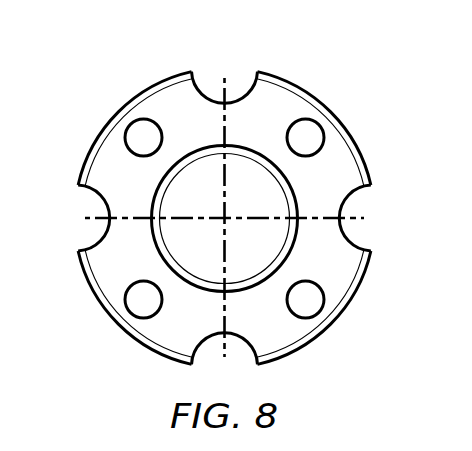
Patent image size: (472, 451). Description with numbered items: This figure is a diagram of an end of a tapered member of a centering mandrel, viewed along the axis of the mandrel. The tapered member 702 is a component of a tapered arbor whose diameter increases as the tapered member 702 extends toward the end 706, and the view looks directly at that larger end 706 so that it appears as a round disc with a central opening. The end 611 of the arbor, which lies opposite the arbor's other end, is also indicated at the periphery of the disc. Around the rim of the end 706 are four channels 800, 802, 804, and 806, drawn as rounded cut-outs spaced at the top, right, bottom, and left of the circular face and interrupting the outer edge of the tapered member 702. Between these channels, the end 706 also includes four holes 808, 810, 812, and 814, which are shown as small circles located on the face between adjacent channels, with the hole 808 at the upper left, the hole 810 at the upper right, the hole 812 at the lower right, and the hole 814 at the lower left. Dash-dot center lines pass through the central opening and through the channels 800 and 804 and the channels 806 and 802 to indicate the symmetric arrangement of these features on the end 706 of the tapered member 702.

The channel 800 is at (212, 82).
The tapered member 702 is at (154, 81).
The end 611 is at (282, 80).
The end 706 is at (375, 265).
The channel 802 is at (358, 236).
The channel 804 is at (196, 368).
The channel 806 is at (84, 234).
The hole 808 is at (145, 138).
The hole 810 is at (305, 137).
The hole 812 is at (305, 300).
The hole 814 is at (144, 300).